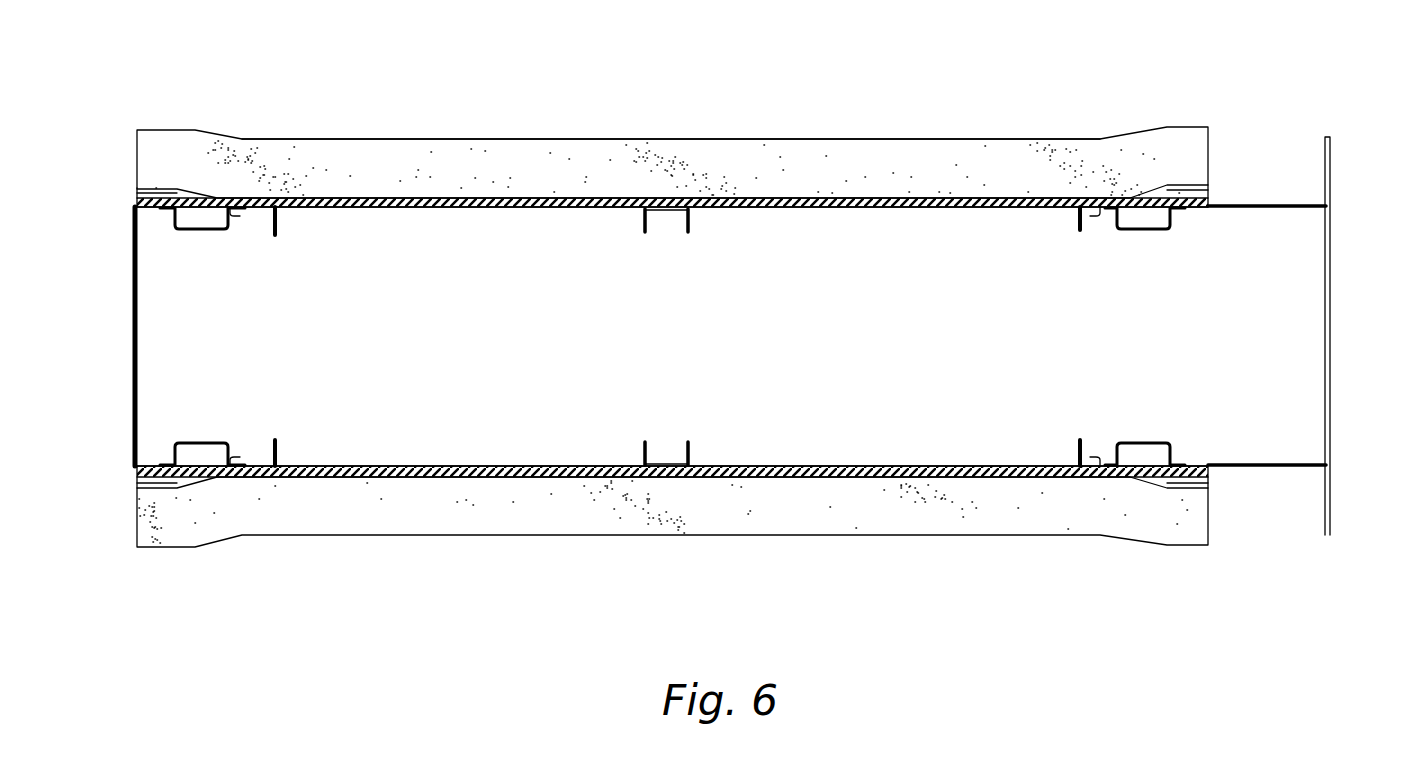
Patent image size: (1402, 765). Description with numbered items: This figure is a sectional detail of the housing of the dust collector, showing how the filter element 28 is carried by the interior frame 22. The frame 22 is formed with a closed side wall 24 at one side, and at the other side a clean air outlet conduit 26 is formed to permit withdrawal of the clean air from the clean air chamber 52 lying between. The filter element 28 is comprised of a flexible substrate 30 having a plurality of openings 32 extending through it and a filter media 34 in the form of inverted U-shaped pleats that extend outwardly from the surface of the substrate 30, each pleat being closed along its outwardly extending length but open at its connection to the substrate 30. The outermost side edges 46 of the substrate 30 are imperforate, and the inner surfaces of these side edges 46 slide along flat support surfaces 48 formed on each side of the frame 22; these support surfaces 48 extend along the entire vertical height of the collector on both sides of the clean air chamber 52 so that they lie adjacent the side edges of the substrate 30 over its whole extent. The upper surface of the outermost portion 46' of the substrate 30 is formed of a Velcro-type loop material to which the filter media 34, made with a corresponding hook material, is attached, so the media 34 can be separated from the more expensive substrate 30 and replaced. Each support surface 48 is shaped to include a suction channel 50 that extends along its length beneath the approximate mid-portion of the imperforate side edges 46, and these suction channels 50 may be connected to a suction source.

The interior frame 22 is at (285, 222).
The closed side wall 24 is at (133, 368).
The clean air outlet conduit 26 is at (1287, 326).
The filter element 28 is at (682, 138).
The flexible substrate 30 is at (1065, 209).
The openings 32 is at (1040, 209).
The filter media 34 is at (976, 152).
The outermost side edges 46 is at (685, 336).
The outermost portion 46' is at (647, 337).
The flat support surfaces 48 is at (133, 208).
The suction channel 50 is at (205, 230).
The clean air chamber 52 is at (655, 353).